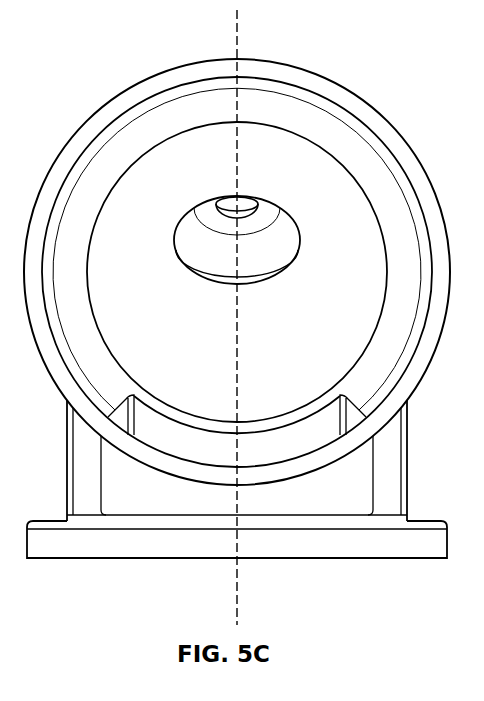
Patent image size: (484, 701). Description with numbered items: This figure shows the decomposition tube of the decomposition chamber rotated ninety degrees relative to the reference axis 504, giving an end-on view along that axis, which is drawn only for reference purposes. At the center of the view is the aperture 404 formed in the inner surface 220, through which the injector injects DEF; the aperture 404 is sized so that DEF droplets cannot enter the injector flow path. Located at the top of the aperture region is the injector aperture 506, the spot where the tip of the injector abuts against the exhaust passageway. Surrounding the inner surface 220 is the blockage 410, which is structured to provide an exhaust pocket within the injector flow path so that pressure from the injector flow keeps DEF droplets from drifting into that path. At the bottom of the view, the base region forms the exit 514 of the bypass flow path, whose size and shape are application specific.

The axis 504 is at (236, 48).
The blockage 410 is at (322, 112).
The inner surface 220 is at (358, 353).
The aperture 404 is at (292, 262).
The injector aperture 506 is at (262, 207).
The exit of the bypass flow path 514 is at (158, 437).